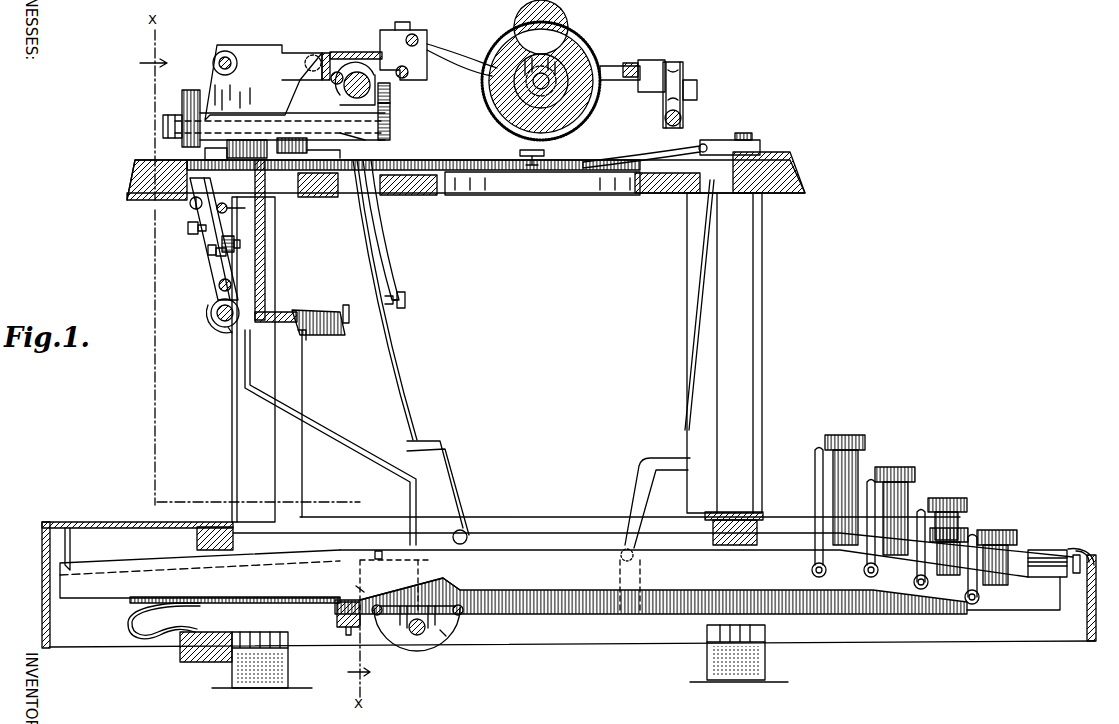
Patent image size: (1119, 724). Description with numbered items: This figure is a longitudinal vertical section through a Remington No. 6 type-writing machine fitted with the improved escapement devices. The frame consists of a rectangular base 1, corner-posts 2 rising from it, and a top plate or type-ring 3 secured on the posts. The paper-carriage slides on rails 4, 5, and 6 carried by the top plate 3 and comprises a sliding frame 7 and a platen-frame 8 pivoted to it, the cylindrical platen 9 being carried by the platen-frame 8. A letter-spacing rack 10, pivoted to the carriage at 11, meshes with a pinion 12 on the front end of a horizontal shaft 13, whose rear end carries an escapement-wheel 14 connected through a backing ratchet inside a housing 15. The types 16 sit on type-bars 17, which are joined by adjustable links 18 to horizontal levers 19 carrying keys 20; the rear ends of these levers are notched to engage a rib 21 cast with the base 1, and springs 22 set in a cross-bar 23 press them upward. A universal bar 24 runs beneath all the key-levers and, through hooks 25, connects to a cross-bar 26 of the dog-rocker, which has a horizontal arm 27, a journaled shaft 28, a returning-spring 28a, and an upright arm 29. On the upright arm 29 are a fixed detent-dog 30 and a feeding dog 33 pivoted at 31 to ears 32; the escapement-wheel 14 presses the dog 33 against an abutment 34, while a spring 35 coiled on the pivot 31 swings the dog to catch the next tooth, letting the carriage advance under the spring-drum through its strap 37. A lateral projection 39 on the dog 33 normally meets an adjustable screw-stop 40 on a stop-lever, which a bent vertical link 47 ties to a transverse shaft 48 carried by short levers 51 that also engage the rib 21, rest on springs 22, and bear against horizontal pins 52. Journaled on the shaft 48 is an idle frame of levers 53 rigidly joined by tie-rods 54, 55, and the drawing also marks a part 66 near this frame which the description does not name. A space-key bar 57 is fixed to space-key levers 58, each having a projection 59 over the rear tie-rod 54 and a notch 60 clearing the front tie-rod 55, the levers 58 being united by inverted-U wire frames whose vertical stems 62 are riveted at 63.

The rectangular base 1 is at (569, 581).
The corner-posts 2 is at (497, 369).
The top plate or type-ring 3 is at (466, 176).
The rail 4 is at (237, 63).
The rail 5 is at (355, 84).
The rail 6 is at (682, 122).
The carriage frame 7 is at (336, 47).
The platen-frame 8 is at (455, 60).
The cylindrical platen 9 is at (600, 43).
The letter-spacing rack 10 is at (390, 100).
The pivot 11 is at (331, 82).
The pinion 12 is at (390, 120).
The horizontal shaft 13 is at (365, 140).
The escapement-wheel 14 is at (192, 90).
The housing 15 is at (175, 115).
The types 16 is at (544, 153).
The type-bars 17 is at (637, 148).
The adjustable links 18 is at (400, 392).
The horizontal levers 19 is at (555, 605).
The keys 20 is at (907, 455).
The rib 21 is at (70, 548).
The springs 22 is at (234, 618).
The cross-bar 23 is at (180, 655).
The universal bar 24 is at (337, 614).
The hooks 25 is at (332, 423).
The cross-bar 26 is at (320, 327).
The horizontal arm 27 is at (265, 300).
The journaled shaft 28 is at (211, 313).
The returning-spring 28a is at (216, 337).
The upright arm 29 is at (219, 285).
The detent-dog 30 is at (194, 193).
The pivot 31 is at (208, 250).
The ears 32 is at (208, 261).
The stepping or feeding dog 33 is at (214, 239).
The abutment 34 is at (235, 149).
The spring 35 is at (234, 253).
The strap 37 is at (308, 148).
The lateral projection 39 is at (199, 224).
The adjustable screw-stop 40 is at (232, 202).
The bent vertical link 47 is at (368, 452).
The transverse shaft 48 is at (417, 635).
The short levers 51 is at (290, 566).
The horizontal pins 52 is at (395, 574).
The levers or cross-bars 53 is at (452, 625).
The rear tie-rod 54 is at (378, 620).
The front tie-rod 55 is at (463, 612).
The space-key bar 57 is at (1050, 550).
The space-key levers 58 is at (644, 586).
The projection 59 is at (352, 585).
The notch 60 is at (445, 580).
The vertical stems 62 is at (815, 480).
The rivets 63 is at (984, 597).
The pin 66 is at (450, 638).